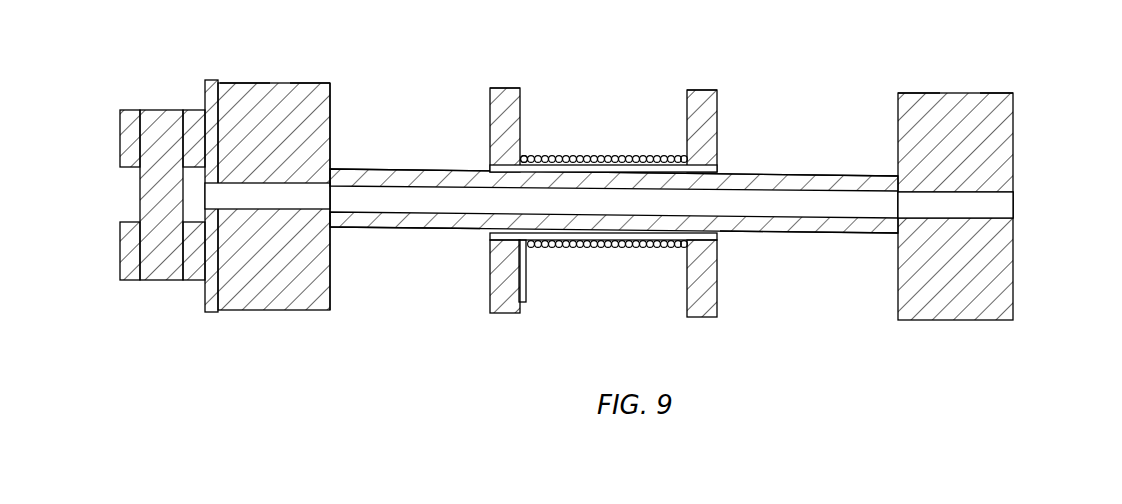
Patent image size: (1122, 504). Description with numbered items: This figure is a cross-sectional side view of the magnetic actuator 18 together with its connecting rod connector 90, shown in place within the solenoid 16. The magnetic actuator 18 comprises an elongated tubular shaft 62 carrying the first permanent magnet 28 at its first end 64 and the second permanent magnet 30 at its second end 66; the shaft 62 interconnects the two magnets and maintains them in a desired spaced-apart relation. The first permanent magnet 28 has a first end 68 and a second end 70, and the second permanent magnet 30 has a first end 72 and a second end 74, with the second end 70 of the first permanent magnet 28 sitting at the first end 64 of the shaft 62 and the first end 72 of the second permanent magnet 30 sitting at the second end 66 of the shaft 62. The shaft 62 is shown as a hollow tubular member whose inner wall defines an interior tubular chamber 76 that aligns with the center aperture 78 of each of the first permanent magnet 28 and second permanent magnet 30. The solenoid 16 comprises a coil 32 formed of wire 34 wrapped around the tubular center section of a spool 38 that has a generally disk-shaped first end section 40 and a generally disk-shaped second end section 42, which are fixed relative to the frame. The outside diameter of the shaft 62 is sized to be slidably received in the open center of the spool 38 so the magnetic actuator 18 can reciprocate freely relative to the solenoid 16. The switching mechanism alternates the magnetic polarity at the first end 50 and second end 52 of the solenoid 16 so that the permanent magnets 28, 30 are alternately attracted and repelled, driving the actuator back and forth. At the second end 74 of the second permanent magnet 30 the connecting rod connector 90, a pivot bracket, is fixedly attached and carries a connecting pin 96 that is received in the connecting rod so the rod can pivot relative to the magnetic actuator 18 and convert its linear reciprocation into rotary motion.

The solenoid 16 is at (599, 198).
The magnetic actuator 18 is at (779, 166).
The first permanent magnet 28 is at (962, 195).
The second permanent magnet 30 is at (641, 192).
The coil 32 is at (552, 151).
The wire 34 is at (604, 156).
The spool 38 is at (719, 267).
The first end section 40 is at (724, 98).
The second end section 42 is at (472, 98).
The first end of solenoid 50 is at (708, 88).
The second end of solenoid 52 is at (498, 86).
The shaft 62 is at (614, 130).
The first end of shaft 64 is at (892, 240).
The second end of shaft 66 is at (341, 235).
The first end of first permanent magnet 68 is at (1012, 92).
The second end of first permanent magnet 70 is at (901, 92).
The first end of second permanent magnet 72 is at (325, 82).
The second end of second permanent magnet 74 is at (229, 82).
The tubular chamber 76 is at (614, 258).
The center aperture 78 is at (278, 197).
The connecting rod connector 90 is at (197, 107).
The connecting pin 96 is at (163, 268).